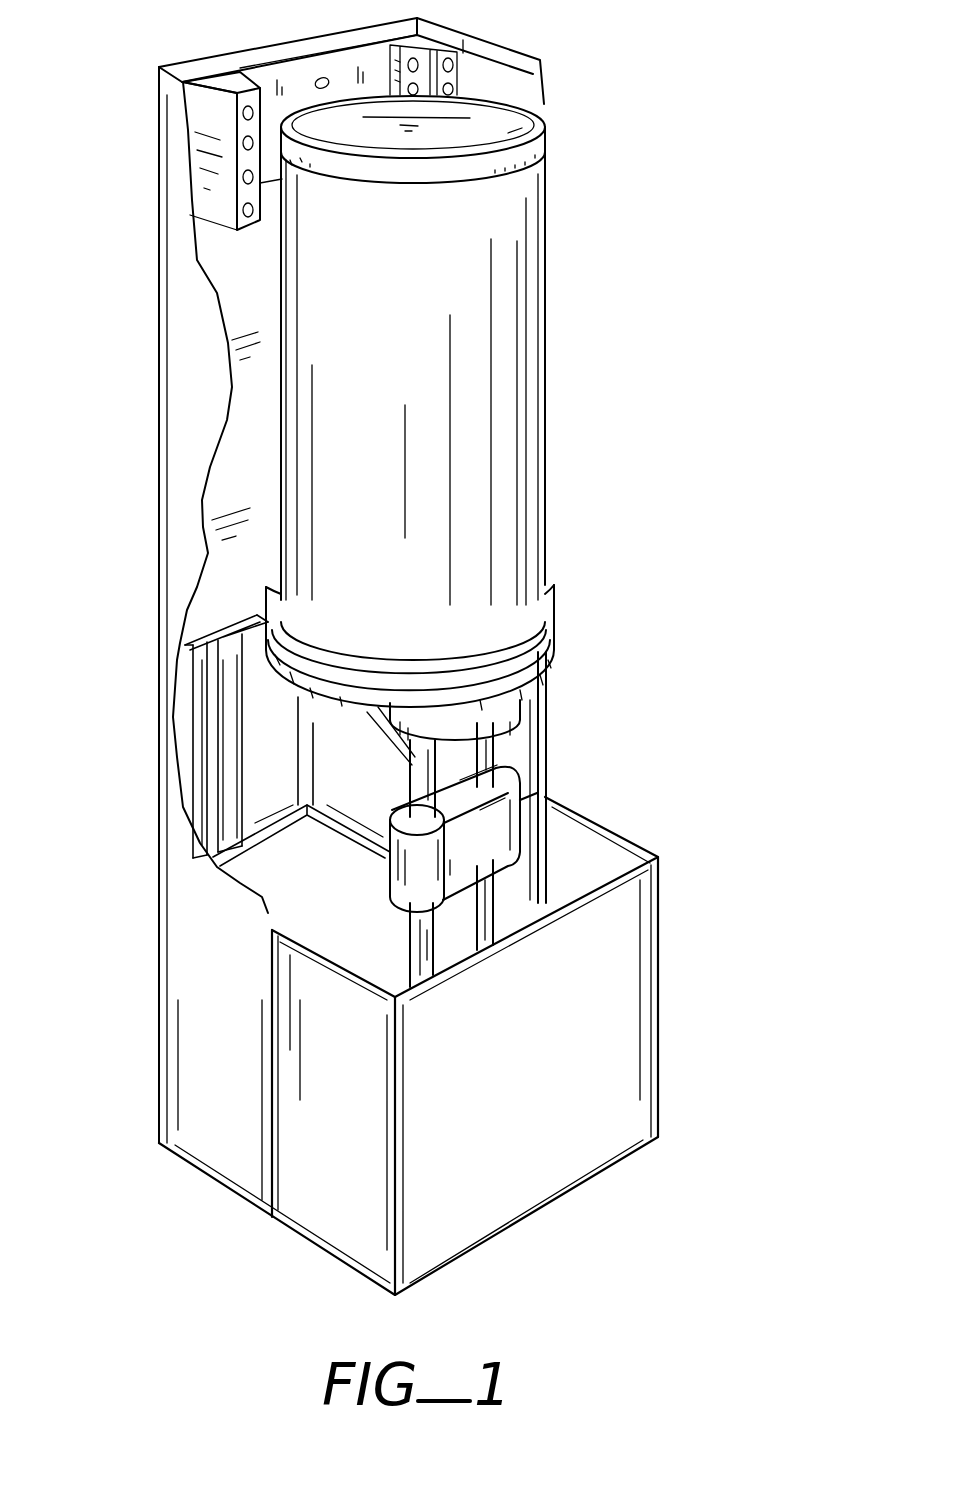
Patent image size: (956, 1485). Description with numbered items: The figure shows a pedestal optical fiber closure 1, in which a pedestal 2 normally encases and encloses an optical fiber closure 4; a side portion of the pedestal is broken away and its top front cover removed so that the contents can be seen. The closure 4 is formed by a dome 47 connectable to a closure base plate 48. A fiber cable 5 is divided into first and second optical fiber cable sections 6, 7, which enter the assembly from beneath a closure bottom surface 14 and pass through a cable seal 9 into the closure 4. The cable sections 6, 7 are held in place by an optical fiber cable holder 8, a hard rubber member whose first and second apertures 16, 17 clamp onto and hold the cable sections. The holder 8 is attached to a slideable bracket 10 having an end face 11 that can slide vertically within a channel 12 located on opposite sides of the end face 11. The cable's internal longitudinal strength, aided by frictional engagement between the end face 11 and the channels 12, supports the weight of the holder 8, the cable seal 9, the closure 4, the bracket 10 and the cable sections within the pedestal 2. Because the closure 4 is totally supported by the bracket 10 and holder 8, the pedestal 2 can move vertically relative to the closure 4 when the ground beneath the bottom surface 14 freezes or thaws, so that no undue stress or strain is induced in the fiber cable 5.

The pedestal optical fiber closure 1 is at (607, 325).
The pedestal 2 is at (590, 1177).
The optical fiber closure 4 is at (279, 314).
The fiber cable 5 is at (425, 948).
The first optical fiber cable section 6 is at (487, 753).
The second optical fiber cable section 7 is at (417, 777).
The optical fiber cable holder 8 is at (386, 904).
The cable seal 9 is at (473, 710).
The slideable bracket 10 is at (363, 768).
The end face 11 is at (262, 686).
The channel 12 is at (222, 633).
The closure bottom surface 14 is at (212, 1183).
The first aperture 16 is at (390, 814).
The second aperture 17 is at (478, 824).
The dome 47 is at (547, 478).
The closure base plate 48 is at (553, 625).